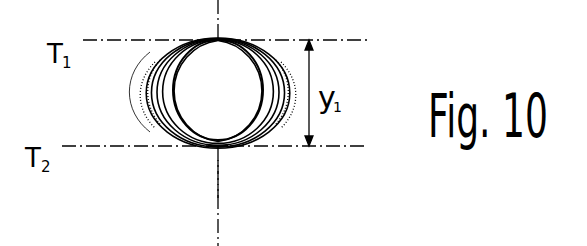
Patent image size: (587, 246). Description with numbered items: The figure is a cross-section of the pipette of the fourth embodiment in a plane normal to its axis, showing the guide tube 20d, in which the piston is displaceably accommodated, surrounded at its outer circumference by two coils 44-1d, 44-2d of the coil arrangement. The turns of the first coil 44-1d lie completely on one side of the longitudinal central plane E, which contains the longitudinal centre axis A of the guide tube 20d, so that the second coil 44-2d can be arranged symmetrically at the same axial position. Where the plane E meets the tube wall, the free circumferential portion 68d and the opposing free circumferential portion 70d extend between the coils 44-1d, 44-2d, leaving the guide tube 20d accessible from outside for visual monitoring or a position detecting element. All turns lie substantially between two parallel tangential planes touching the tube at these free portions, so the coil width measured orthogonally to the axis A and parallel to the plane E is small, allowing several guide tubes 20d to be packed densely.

The guide tube 20d is at (170, 96).
The further free circumferential portion 70d is at (224, 40).
The free circumferential portion 68d is at (210, 147).
The first coil 44-1d is at (156, 121).
The second coil 44-2d is at (285, 120).
The longitudinal centre axis A is at (156, 62).
The longitudinal central plane E is at (226, 190).